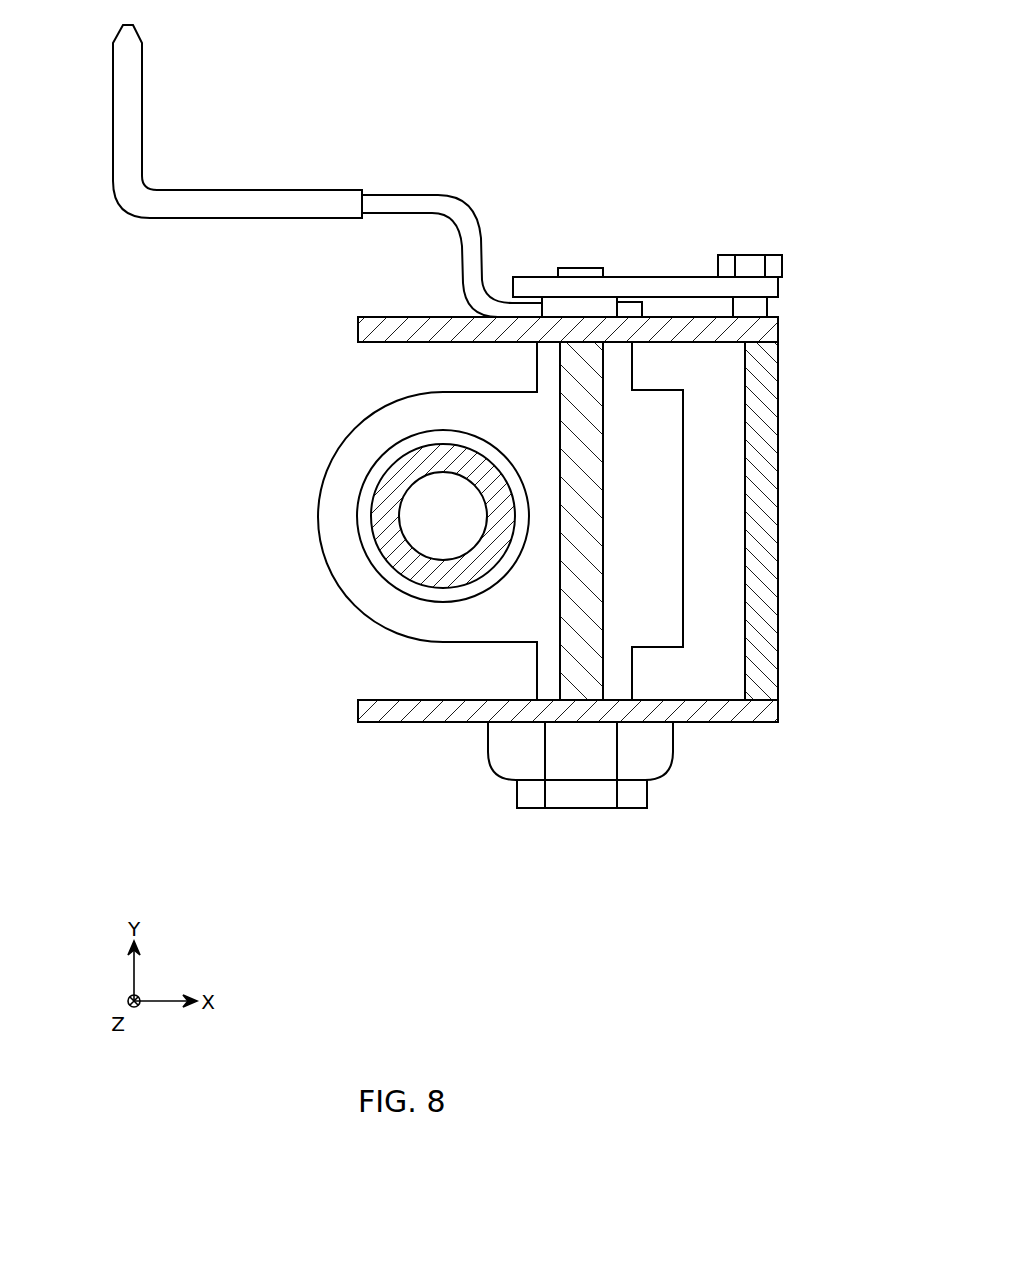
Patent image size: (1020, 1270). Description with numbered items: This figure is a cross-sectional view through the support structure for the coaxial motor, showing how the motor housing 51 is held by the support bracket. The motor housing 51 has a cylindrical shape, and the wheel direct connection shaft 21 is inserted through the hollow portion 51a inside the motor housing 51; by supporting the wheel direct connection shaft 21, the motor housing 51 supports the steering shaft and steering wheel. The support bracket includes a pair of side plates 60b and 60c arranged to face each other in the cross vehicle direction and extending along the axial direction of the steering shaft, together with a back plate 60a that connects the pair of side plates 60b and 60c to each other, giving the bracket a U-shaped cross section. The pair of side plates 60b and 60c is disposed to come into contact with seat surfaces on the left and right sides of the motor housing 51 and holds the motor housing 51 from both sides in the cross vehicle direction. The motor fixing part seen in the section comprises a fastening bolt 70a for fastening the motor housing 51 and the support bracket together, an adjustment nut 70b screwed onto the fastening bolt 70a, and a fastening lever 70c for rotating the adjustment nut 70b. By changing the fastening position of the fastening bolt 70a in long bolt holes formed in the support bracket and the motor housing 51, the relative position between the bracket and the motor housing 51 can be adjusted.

The fastening lever 70c is at (127, 100).
The adjustment nut 70b is at (610, 303).
The fastening bolt 70a is at (595, 685).
The side plate 60c is at (778, 337).
The side plate 60b is at (778, 717).
The back plate 60a is at (780, 510).
The motor housing 51 is at (322, 473).
The hollow portion 51a is at (382, 462).
The wheel direct connection shaft 21 is at (372, 522).